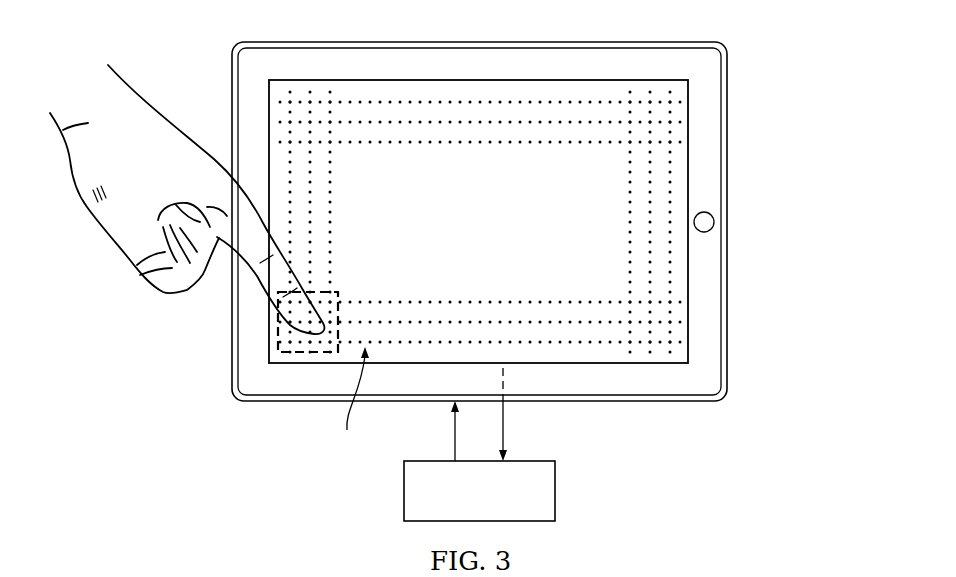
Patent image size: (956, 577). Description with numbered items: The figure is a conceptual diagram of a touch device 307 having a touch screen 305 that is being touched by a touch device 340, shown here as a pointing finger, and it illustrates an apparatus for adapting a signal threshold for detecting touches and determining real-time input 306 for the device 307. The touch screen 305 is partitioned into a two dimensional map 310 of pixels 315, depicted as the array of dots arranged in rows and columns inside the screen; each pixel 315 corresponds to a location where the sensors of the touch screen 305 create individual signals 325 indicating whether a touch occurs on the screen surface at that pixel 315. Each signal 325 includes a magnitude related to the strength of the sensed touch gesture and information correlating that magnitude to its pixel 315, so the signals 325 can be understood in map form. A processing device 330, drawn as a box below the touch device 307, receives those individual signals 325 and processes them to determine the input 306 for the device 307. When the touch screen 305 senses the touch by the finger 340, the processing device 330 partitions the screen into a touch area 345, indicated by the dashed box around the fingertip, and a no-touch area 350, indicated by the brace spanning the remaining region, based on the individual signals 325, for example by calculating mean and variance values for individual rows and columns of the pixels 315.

The touch screen 305 is at (683, 150).
The real-time input 306 is at (455, 432).
The device 307 is at (735, 209).
The two dimensional map 310 is at (349, 401).
The pixels 315 is at (737, 302).
The individual signals 325 is at (503, 432).
The processing device 330 is at (555, 490).
The touch device 340 is at (187, 290).
The touch area 345 is at (333, 291).
The no-touch area 350 is at (628, 36).